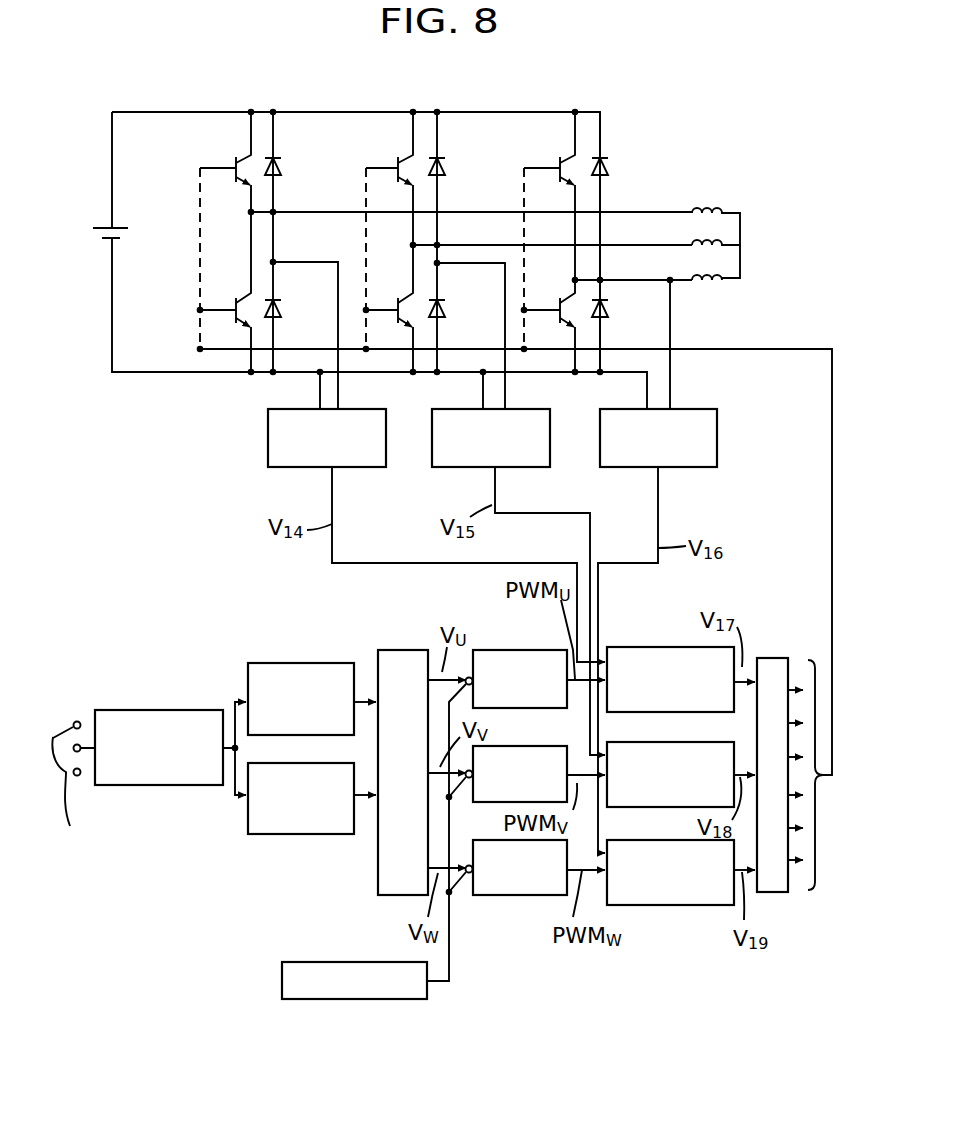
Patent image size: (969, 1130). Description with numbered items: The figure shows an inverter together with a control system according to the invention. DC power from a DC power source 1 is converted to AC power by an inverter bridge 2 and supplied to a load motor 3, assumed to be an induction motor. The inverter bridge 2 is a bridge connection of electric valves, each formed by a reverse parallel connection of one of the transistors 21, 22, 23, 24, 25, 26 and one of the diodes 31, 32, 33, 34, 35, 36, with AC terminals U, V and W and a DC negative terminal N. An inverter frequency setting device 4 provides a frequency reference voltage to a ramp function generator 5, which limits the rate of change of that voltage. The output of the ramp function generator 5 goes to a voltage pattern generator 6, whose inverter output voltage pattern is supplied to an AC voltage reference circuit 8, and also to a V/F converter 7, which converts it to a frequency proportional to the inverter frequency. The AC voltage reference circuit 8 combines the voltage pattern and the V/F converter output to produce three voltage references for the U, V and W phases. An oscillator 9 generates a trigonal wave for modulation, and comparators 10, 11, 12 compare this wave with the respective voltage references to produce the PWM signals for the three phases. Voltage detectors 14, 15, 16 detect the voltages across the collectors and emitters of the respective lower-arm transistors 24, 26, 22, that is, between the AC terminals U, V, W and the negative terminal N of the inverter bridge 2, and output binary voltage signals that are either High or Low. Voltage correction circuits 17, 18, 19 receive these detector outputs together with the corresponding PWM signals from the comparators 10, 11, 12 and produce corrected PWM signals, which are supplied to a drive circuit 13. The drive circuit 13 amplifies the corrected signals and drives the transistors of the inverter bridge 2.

The DC power source 1 is at (118, 227).
The inverter bridge 2 is at (510, 112).
The load motor 3 is at (740, 232).
The inverter frequency setting device 4 is at (128, 817).
The ramp function generator 5 is at (155, 710).
The voltage pattern generator 6 is at (298, 660).
The V/F converter 7 is at (300, 834).
The AC voltage reference circuit 8 is at (397, 650).
The oscillator 9 is at (315, 962).
The comparator 10 is at (510, 650).
The comparator 11 is at (520, 746).
The comparator 12 is at (513, 898).
The drive circuit 13 is at (765, 658).
The voltage detector 14 is at (352, 467).
The voltage detector 15 is at (517, 467).
The voltage detector 16 is at (680, 467).
The voltage correction circuit 17 is at (678, 647).
The voltage correction circuit 18 is at (680, 742).
The voltage correction circuit 19 is at (667, 905).
The transistor 21 is at (236, 160).
The transistor 22 is at (560, 303).
The transistor 23 is at (398, 160).
The transistor 24 is at (236, 303).
The transistor 25 is at (560, 160).
The transistor 26 is at (398, 303).
The diode 31 is at (281, 172).
The diode 32 is at (608, 312).
The diode 33 is at (445, 172).
The diode 34 is at (281, 312).
The diode 35 is at (608, 170).
The diode 36 is at (445, 312).